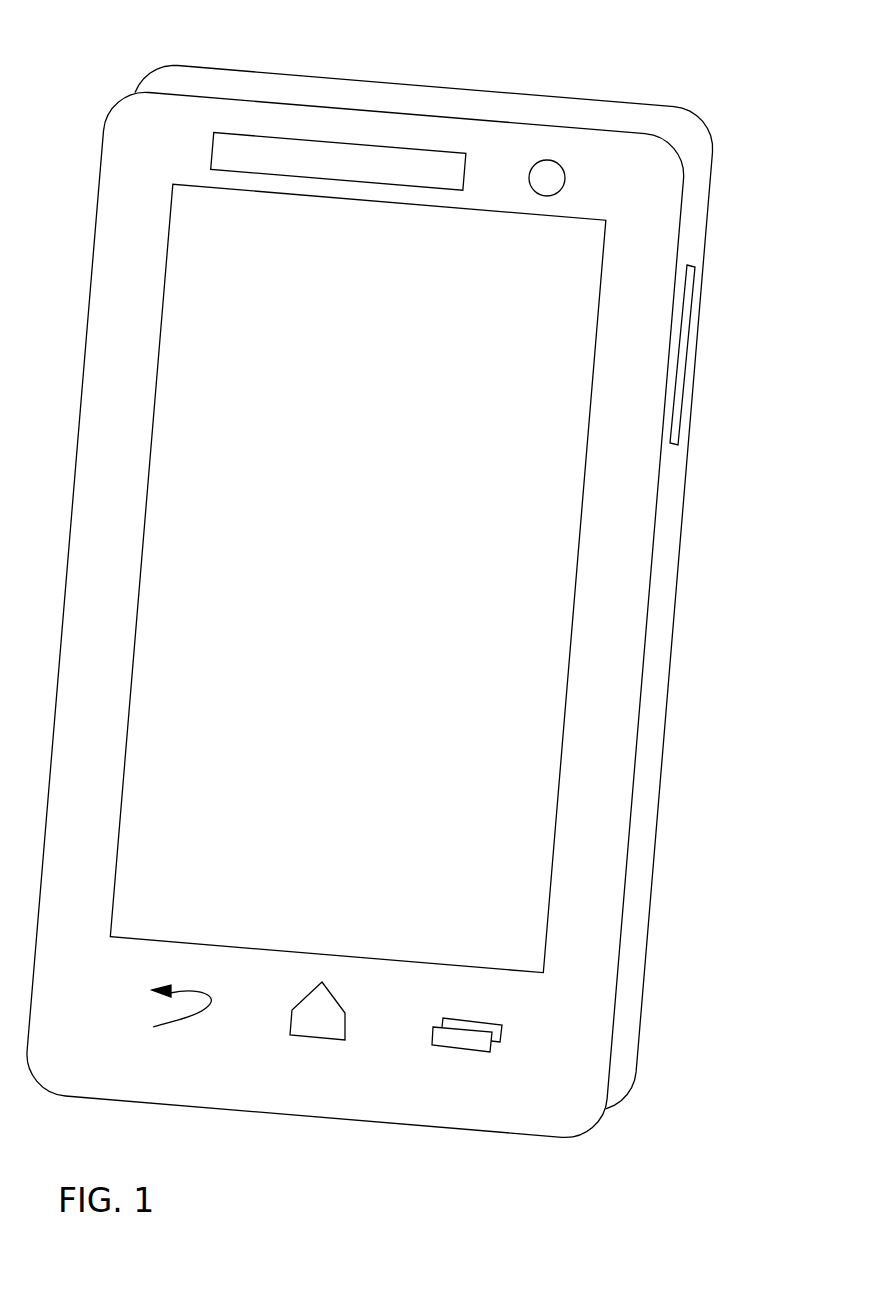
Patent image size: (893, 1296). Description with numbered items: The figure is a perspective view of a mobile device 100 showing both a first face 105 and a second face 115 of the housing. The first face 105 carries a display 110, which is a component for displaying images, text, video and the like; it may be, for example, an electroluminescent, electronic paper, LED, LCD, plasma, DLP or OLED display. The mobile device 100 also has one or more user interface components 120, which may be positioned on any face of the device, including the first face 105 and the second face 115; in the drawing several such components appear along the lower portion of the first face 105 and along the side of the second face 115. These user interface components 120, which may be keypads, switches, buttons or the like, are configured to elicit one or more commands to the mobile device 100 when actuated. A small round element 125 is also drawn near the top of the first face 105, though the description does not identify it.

The mobile device 100 is at (417, 603).
The first face 105 is at (617, 645).
The display 110 is at (548, 292).
The second face 115 is at (672, 527).
The user interface components 120 is at (687, 353).
The front camera 125 is at (545, 177).